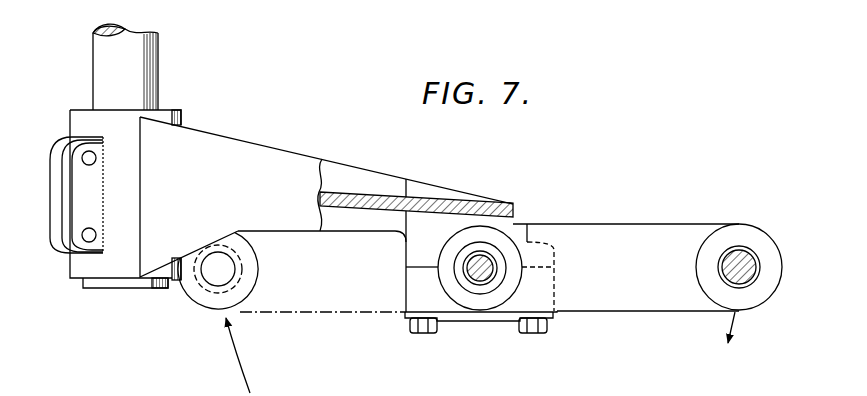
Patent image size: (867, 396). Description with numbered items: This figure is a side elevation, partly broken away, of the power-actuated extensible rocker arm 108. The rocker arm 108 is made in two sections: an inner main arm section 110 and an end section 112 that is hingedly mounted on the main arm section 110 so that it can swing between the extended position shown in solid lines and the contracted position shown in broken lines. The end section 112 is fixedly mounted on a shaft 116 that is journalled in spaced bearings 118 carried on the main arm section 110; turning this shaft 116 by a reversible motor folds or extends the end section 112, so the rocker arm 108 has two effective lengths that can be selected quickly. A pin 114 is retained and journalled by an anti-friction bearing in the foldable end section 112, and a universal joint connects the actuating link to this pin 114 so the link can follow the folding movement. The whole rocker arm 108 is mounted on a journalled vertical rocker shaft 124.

The rocker arm 108 is at (448, 188).
The main arm section 110 is at (255, 160).
The end section 112 is at (660, 288).
The pin 114 is at (737, 253).
The shaft 116 is at (481, 279).
The bearings 118 is at (450, 285).
The rocker shaft 124 is at (110, 73).